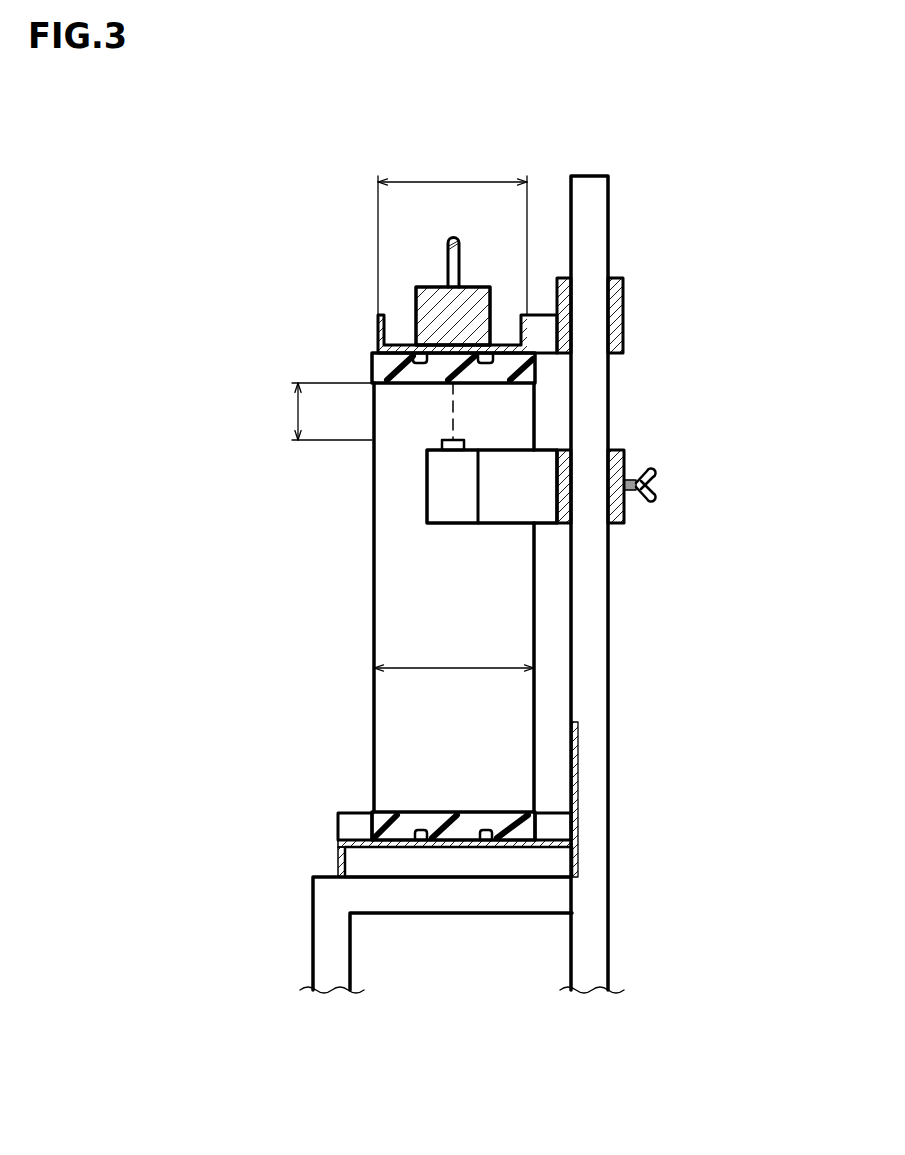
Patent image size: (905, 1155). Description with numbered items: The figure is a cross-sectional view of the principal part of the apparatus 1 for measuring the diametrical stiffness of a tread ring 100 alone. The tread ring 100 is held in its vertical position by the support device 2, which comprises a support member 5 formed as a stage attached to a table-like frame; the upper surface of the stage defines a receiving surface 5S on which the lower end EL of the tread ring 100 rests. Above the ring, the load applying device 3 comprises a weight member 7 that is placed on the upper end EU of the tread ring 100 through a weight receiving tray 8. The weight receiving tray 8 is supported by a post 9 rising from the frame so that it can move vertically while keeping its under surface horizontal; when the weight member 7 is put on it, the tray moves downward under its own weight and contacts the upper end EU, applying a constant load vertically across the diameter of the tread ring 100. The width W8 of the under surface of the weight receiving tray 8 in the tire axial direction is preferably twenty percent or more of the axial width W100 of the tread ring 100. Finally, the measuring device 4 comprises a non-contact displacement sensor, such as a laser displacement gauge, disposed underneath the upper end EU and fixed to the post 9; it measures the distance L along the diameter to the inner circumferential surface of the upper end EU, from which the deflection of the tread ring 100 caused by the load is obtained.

The apparatus 1 is at (524, 584).
The support device 2 is at (352, 740).
The load applying device 3 is at (540, 278).
The measuring device 4 is at (427, 486).
The support member 5 is at (338, 865).
The receiving surface 5S is at (397, 838).
The weight member 7 is at (433, 287).
The weight receiving tray 8 is at (378, 347).
The post 9 is at (608, 670).
The tread ring 100 is at (534, 600).
The upper end of the tread ring EU is at (488, 377).
The lower end of the tread ring EL is at (470, 825).
The distance L is at (321, 411).
The width of the under surface of the weight receiving tray W8 is at (452, 231).
The axial width of the tread ring W100 is at (454, 685).